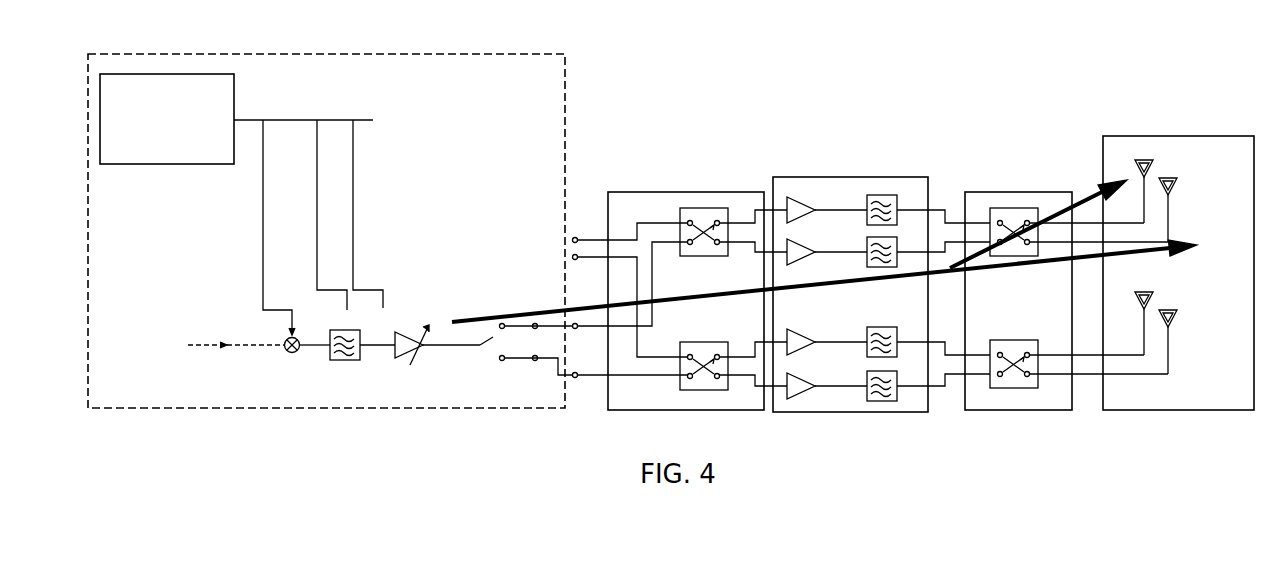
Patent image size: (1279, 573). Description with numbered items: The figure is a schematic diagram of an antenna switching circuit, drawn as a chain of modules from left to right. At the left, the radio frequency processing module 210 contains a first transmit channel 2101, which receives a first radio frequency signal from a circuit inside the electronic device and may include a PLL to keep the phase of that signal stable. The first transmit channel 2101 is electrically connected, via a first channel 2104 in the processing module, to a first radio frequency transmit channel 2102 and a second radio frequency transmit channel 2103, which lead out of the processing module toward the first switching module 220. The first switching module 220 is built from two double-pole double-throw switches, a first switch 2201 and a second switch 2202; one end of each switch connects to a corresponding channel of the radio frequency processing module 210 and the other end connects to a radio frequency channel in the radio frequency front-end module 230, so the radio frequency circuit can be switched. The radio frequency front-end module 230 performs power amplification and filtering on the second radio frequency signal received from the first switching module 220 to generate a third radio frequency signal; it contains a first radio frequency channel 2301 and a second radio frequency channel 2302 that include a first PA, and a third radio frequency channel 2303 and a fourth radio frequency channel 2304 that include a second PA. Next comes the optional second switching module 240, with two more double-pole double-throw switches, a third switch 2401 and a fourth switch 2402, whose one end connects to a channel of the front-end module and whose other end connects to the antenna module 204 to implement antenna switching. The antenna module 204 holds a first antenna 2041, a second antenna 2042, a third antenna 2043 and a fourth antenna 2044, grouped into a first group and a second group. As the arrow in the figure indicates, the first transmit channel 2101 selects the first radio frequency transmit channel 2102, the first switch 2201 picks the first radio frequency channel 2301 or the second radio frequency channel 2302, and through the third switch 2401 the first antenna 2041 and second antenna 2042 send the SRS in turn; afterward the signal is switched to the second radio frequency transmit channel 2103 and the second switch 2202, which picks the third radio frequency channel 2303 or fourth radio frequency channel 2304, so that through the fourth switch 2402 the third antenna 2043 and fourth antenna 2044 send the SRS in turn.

The radio frequency processing module 210 is at (566, 126).
The first transmit channel 2101 is at (138, 165).
The first radio frequency transmit channel 2102 is at (505, 313).
The second radio frequency transmit channel 2103 is at (515, 365).
The first channel 2104 is at (262, 292).
The first switching module 220 is at (680, 191).
The first switch 2201 is at (697, 257).
The second switch 2202 is at (707, 341).
The radio frequency front-end module 230 is at (845, 177).
The first radio frequency channel 2301 is at (858, 211).
The second radio frequency channel 2302 is at (862, 254).
The third radio frequency channel 2303 is at (825, 342).
The fourth radio frequency channel 2304 is at (852, 383).
The second switching module 240 is at (1002, 192).
The third switch 2401 is at (997, 258).
The fourth switch 2402 is at (1008, 339).
The antenna module 204 is at (1103, 136).
The first antenna 2041 is at (1151, 165).
The second antenna 2042 is at (1174, 190).
The third antenna 2043 is at (1146, 292).
The fourth antenna 2044 is at (1174, 318).